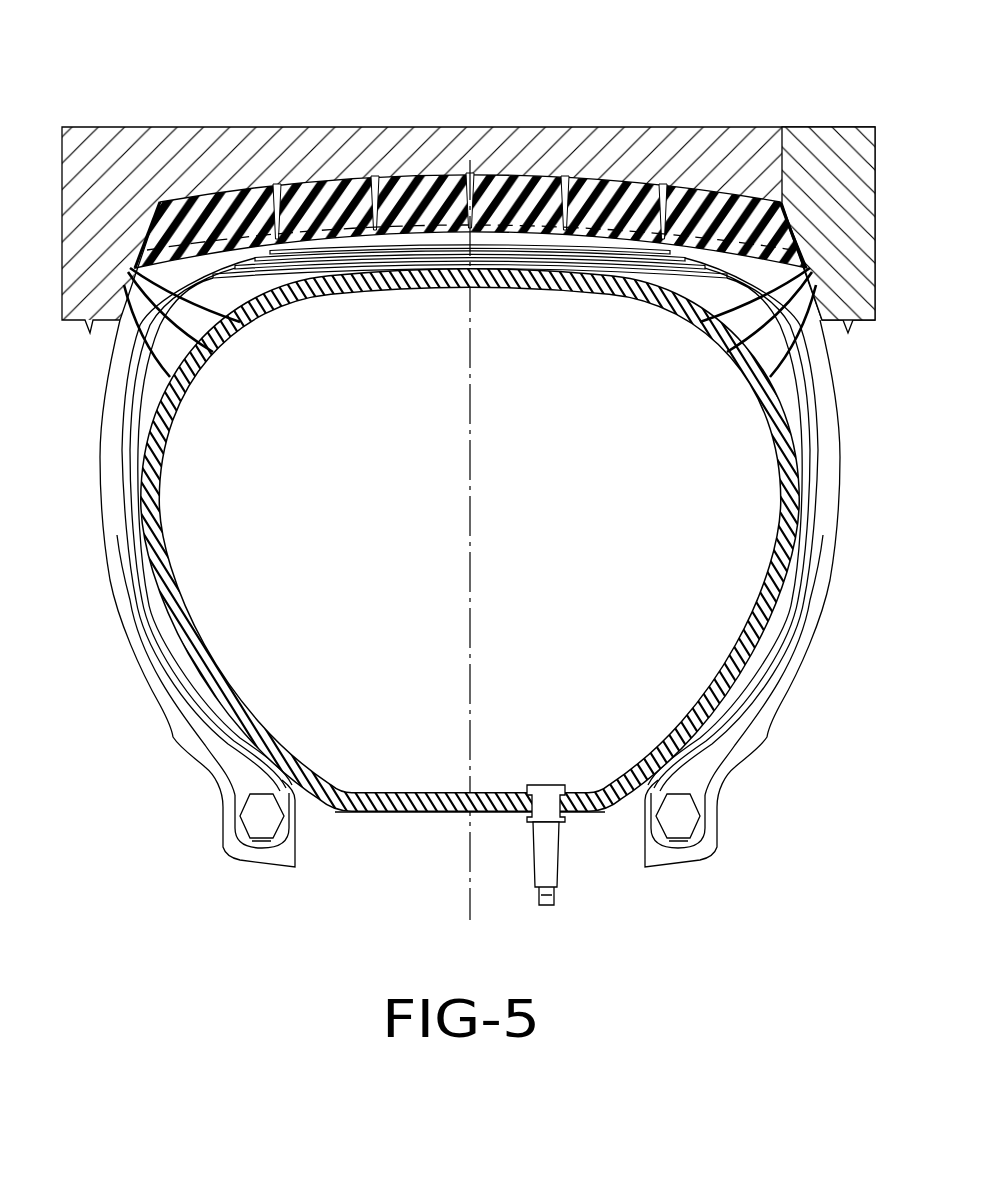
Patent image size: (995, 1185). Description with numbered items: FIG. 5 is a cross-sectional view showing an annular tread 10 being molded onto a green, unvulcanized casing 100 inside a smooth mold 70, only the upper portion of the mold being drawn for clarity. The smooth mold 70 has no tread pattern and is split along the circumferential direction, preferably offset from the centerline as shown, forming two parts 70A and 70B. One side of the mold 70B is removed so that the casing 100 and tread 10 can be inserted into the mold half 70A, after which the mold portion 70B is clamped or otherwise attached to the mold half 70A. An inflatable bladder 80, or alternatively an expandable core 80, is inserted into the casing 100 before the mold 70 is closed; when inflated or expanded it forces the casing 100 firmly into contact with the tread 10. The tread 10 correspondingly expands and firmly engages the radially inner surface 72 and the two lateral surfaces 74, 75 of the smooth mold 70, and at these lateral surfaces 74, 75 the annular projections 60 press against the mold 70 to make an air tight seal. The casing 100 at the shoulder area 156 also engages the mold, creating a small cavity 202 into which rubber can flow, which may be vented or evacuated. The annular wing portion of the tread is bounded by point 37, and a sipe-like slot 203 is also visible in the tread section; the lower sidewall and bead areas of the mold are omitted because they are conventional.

The tread 10 is at (333, 181).
The annular wing portion point 37 is at (224, 232).
The annular projections 60 is at (137, 278).
The smooth mold 70 is at (670, 133).
The mold half 70A is at (98, 168).
The mold portion 70B is at (853, 163).
The radially inner surface 72 is at (570, 187).
The lateral surface of the mold 74 is at (213, 352).
The lateral surface of the mold 75 is at (727, 352).
The inflatable bladder 80 is at (395, 812).
The casing 100 is at (92, 457).
The shoulder area 156 is at (170, 377).
The cavity 202 is at (240, 323).
The tread sipe 203 is at (376, 183).